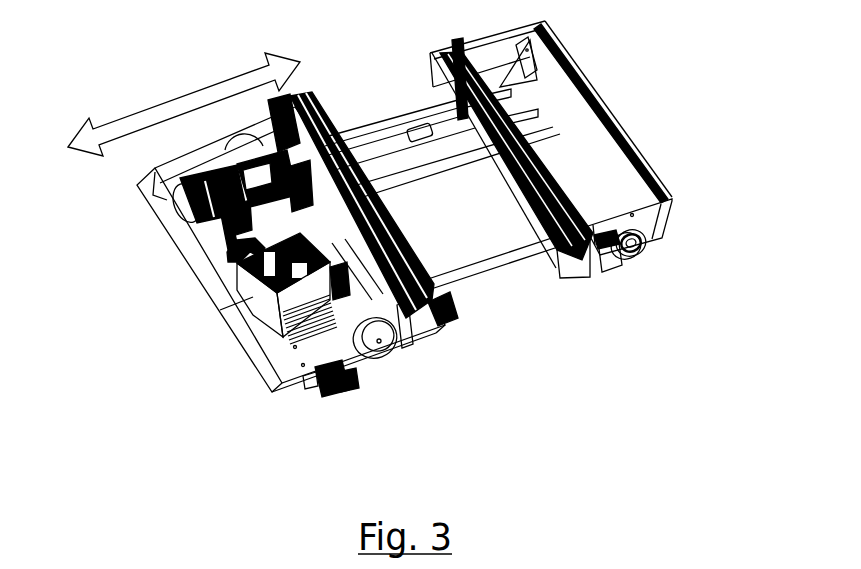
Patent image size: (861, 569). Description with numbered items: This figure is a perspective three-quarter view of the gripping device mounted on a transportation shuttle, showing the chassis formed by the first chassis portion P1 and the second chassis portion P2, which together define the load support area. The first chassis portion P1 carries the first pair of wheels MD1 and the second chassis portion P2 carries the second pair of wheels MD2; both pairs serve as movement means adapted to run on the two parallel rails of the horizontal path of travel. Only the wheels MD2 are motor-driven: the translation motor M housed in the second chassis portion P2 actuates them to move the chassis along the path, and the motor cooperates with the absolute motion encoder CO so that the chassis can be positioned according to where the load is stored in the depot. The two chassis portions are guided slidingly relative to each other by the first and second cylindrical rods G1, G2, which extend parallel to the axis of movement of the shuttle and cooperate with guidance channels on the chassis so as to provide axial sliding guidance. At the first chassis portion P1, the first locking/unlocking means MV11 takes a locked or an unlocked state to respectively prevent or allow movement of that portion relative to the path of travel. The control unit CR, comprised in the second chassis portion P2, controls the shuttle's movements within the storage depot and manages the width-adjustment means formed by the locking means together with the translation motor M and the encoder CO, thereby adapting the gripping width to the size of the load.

The first chassis portion P1 is at (600, 92).
The second chassis portion P2 is at (187, 247).
The first cylindrical rod G1 is at (480, 267).
The second cylindrical rod G2 is at (403, 160).
The translation motor M is at (146, 200).
The wheels of the second pair MD2 is at (233, 128).
The wheels of the first pair MD1 is at (645, 248).
The first locking/unlocking means MV11 is at (606, 272).
The control unit CR is at (245, 303).
The absolute motion encoder CO is at (343, 389).